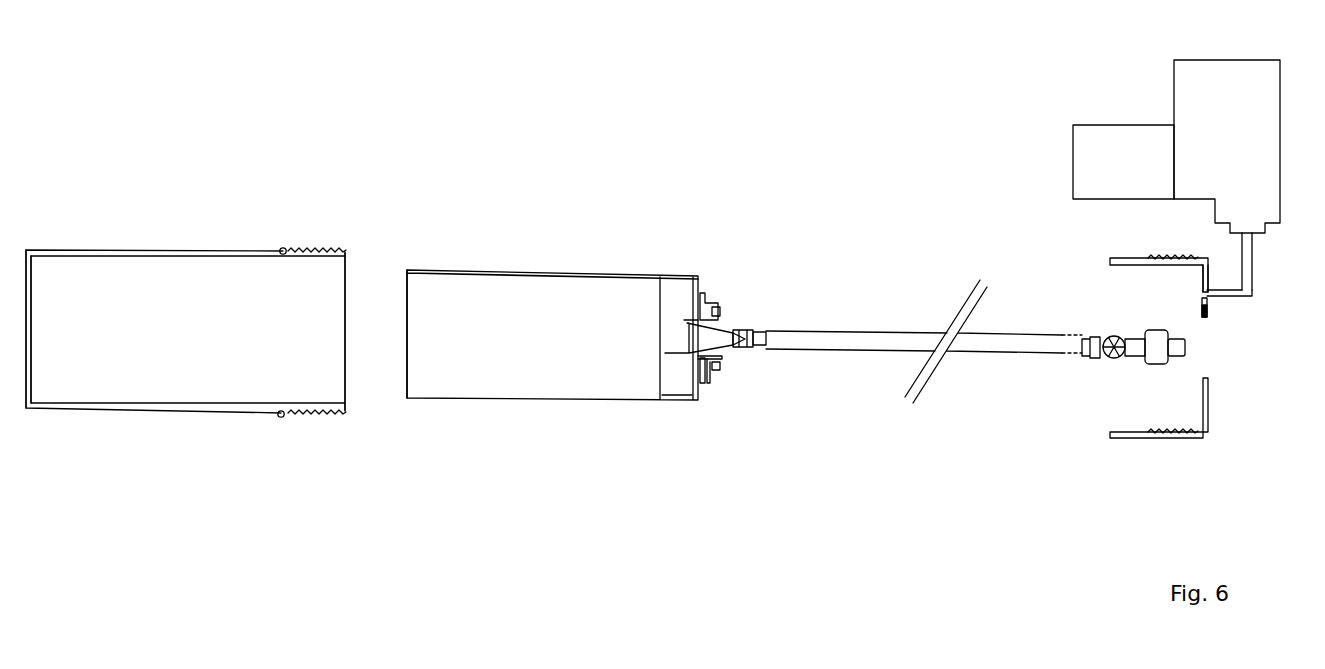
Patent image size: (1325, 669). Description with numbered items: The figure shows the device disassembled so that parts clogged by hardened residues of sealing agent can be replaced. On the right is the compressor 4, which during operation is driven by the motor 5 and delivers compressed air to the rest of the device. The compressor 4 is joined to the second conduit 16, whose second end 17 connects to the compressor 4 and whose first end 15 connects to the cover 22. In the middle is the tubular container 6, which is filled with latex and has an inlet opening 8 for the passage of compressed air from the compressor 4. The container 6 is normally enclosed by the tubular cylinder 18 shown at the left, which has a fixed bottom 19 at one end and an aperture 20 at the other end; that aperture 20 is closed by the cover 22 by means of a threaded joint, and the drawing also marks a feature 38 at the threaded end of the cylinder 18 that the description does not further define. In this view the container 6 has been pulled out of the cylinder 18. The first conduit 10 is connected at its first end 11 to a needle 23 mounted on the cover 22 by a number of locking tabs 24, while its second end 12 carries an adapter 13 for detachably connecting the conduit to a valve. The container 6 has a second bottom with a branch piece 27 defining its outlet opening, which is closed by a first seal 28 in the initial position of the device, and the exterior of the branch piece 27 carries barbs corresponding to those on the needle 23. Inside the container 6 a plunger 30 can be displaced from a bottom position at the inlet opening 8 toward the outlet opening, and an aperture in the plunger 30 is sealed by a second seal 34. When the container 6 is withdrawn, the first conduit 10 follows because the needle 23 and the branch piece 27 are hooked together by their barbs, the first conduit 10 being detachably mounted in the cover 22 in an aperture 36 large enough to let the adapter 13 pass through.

The compressor 4 is at (1218, 88).
The motor 5 is at (1100, 143).
The tubular container 6 is at (587, 272).
The inlet opening 8 is at (410, 337).
The first conduit 10 is at (863, 340).
The first end of the first conduit 11 is at (750, 327).
The second end of the first conduit 12 is at (1077, 354).
The adapter 13 is at (1135, 348).
The first end of the second conduit 15 is at (1207, 295).
The second conduit 16 is at (1245, 293).
The second end of the second conduit 17 is at (1252, 247).
The tubular cylinder 18 is at (165, 408).
The fixed bottom 19 is at (25, 330).
The aperture 20 is at (340, 352).
The cover 22 is at (1207, 395).
The needle 23 is at (722, 340).
The locking tabs 24 is at (718, 305).
The branch piece 27 is at (722, 360).
The first seal 28 is at (698, 376).
The plunger 30 is at (672, 393).
The second seal 34 is at (665, 353).
The aperture 36 is at (1208, 343).
The retaining rings 38 is at (281, 249).